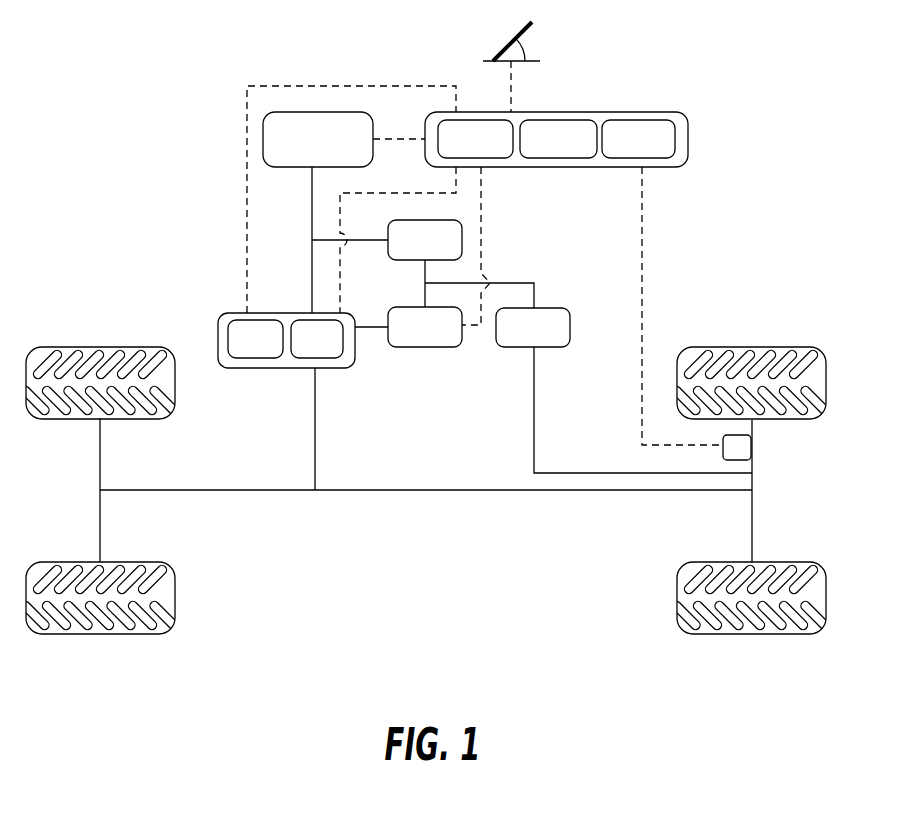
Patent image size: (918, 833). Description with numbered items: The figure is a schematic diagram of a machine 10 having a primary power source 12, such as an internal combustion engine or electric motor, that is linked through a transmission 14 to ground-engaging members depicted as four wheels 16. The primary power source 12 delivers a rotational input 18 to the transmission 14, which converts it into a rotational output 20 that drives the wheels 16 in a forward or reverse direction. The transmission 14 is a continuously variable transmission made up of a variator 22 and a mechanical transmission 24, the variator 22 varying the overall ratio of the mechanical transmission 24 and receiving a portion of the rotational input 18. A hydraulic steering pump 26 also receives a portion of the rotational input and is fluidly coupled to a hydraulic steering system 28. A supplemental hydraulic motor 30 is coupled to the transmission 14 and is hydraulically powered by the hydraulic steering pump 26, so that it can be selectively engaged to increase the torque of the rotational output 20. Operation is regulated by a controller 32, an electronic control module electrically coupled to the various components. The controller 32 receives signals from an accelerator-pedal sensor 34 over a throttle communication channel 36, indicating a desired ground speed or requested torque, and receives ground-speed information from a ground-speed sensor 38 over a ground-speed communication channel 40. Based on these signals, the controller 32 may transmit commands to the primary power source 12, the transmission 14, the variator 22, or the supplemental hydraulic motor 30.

The machine 10 is at (130, 148).
The primary power source 12 is at (318, 139).
The transmission 14 is at (264, 340).
The wheels 16 is at (108, 347).
The rotational input 18 is at (312, 203).
The rotational output 20 is at (316, 430).
The variator 22 is at (255, 339).
The mechanical transmission 24 is at (317, 339).
The hydraulic steering pump 26 is at (425, 240).
The hydraulic steering system 28 is at (533, 327).
The supplemental hydraulic motor 30 is at (425, 327).
The controller 32 is at (688, 138).
The accelerator-pedal sensor 34 is at (527, 33).
The throttle communication channel 36 is at (512, 92).
The ground-speed sensor 38 is at (737, 447).
The ground-speed communication channel 40 is at (642, 240).